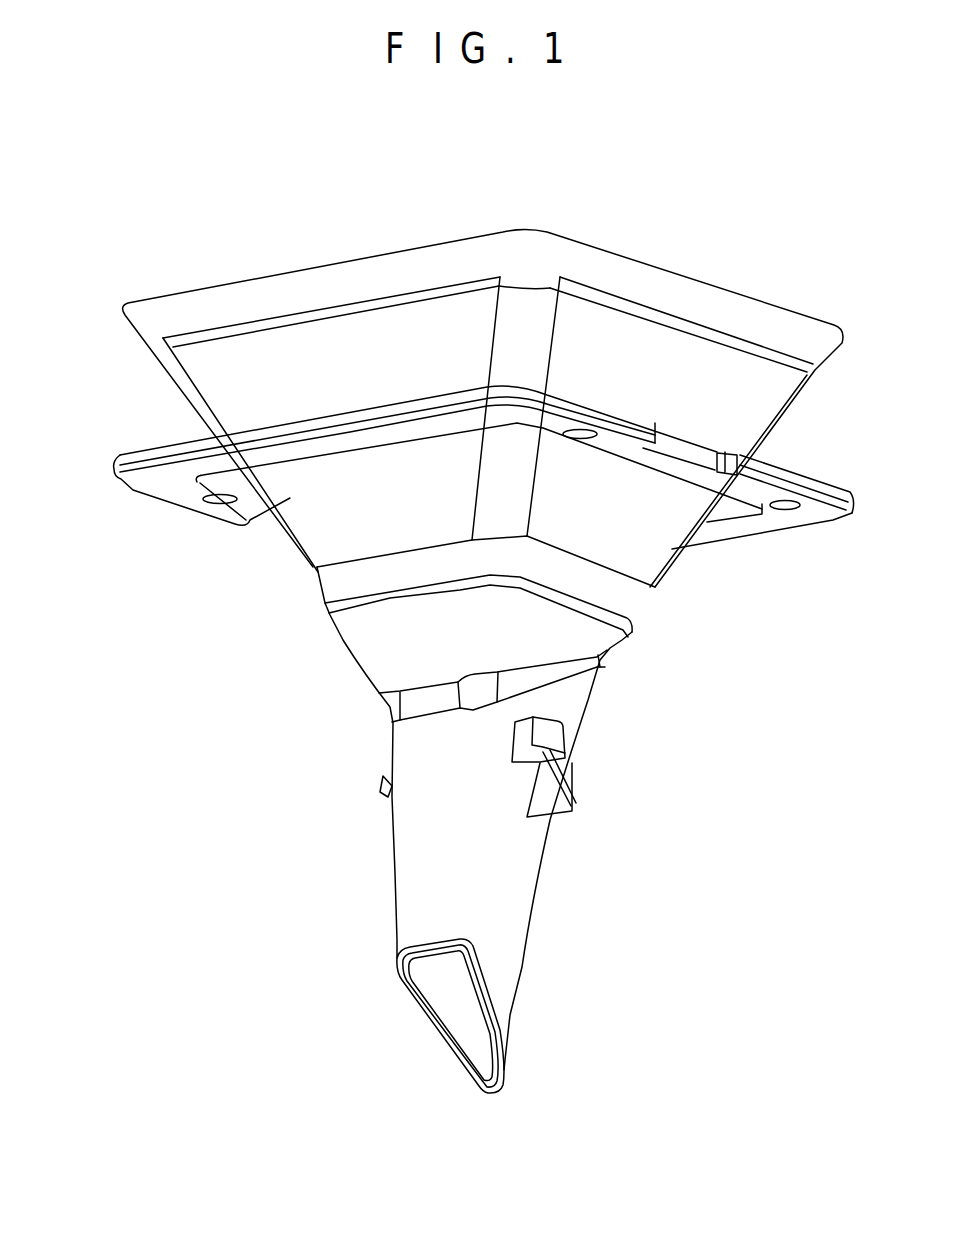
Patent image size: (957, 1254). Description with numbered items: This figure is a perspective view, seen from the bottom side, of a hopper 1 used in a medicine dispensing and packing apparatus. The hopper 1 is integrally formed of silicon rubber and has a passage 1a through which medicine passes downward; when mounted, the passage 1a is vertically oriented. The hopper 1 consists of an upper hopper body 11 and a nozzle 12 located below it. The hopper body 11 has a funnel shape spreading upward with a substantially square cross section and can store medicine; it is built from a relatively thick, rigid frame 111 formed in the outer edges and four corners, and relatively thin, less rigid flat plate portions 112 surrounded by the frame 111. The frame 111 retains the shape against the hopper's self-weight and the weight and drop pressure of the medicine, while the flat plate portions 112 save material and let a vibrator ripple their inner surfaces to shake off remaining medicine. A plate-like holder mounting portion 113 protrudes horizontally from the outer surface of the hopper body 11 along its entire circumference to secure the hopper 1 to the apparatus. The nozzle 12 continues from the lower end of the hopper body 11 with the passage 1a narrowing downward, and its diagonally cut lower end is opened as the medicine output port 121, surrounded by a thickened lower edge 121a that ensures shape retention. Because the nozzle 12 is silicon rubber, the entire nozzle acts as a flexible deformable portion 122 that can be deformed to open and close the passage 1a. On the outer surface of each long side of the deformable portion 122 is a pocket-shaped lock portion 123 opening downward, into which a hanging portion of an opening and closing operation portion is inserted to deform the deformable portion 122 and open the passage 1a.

The hopper 1 is at (759, 653).
The passage 1a is at (450, 997).
The hopper body 11 is at (683, 570).
The nozzle 12 is at (593, 703).
The frame 111 is at (513, 328).
The flat plate portion 112 is at (327, 363).
The holder mounting portion 113 is at (155, 450).
The medicine output port 121 is at (452, 1067).
The lower edge 121a is at (468, 950).
The deformable portion 122 is at (420, 750).
The lock portion 123 is at (383, 787).